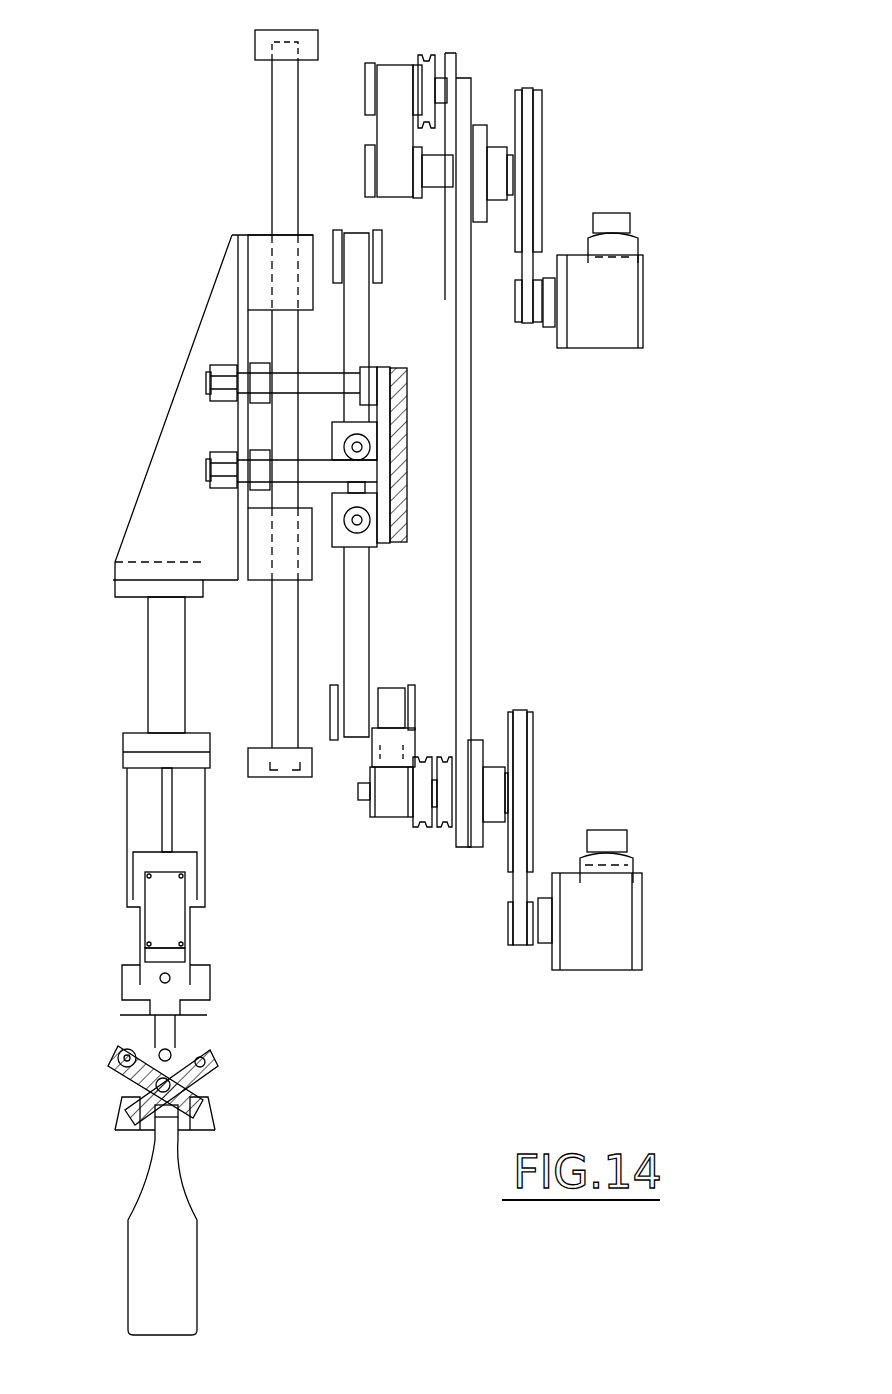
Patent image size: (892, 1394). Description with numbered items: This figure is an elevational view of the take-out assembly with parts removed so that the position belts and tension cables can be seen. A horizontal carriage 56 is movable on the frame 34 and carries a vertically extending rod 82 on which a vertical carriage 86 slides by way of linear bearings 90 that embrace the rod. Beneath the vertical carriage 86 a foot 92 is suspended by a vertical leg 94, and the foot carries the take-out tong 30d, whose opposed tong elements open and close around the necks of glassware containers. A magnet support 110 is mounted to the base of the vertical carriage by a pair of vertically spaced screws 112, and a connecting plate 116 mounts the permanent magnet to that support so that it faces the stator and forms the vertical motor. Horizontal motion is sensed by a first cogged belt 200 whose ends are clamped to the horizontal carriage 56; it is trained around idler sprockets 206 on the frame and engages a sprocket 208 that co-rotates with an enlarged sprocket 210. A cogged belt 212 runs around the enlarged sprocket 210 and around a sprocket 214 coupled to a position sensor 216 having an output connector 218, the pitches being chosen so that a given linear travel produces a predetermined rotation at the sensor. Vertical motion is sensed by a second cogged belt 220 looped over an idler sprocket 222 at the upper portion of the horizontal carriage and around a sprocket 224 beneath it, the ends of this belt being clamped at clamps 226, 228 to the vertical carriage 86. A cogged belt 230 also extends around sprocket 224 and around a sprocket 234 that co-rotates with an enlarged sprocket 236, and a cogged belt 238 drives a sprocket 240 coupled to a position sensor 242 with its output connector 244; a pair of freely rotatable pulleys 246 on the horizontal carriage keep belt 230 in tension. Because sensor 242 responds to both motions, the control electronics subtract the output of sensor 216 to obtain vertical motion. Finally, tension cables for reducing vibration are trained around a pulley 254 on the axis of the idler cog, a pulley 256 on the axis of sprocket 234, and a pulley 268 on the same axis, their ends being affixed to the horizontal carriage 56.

The horizontal carriage 56 is at (248, 45).
The rod 82 is at (276, 662).
The vertical carriage 86 is at (128, 510).
The linear bearing 90 is at (257, 262).
The foot 92 is at (128, 742).
The vertical leg 94 is at (160, 658).
The screw 112 is at (207, 467).
The connecting plate 116 is at (400, 463).
The magnet support 110 is at (385, 510).
The frame 34 is at (470, 478).
The first cogged belt 200 is at (383, 125).
The idler sprocket 206 is at (418, 58).
The sprocket 208 is at (420, 200).
The enlarged sprocket 210 is at (545, 100).
The cogged belt 212 is at (528, 172).
The sprocket 214 is at (510, 323).
The position sensor 216 is at (635, 300).
The output connector 218 is at (623, 220).
The second cogged belt 220 is at (362, 603).
The idler sprocket 222 is at (380, 285).
The sprocket 224 is at (415, 700).
The clamp 226 is at (370, 432).
The clamp 228 is at (368, 540).
The cogged belt 230 is at (390, 695).
The sprocket 234 is at (368, 822).
The enlarged sprocket 236 is at (540, 735).
The cogged belt 238 is at (525, 783).
The sprocket 240 is at (505, 938).
The position sensor 242 is at (628, 910).
The output connector 244 is at (620, 838).
The pulley 246 is at (405, 742).
The pulley 254 is at (452, 57).
The pulley 256 is at (441, 838).
The pulley 268 is at (418, 838).
The take-out tong 30d is at (200, 1085).